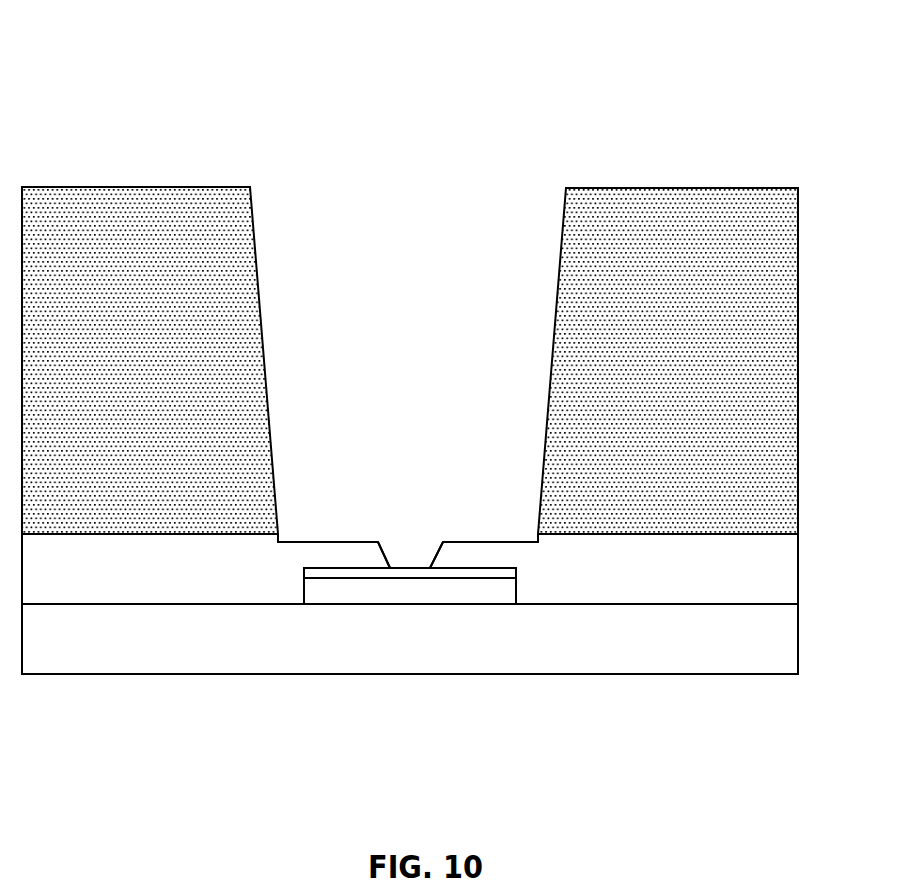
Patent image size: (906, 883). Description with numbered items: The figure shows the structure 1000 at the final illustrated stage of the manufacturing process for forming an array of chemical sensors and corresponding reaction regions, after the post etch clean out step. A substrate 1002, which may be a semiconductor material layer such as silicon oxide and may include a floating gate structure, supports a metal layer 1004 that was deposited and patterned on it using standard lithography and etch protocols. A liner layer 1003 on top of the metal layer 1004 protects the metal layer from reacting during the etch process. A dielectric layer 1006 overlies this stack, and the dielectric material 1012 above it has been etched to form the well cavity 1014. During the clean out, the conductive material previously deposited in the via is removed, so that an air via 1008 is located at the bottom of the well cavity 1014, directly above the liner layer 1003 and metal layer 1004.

The structure 1000 is at (126, 83).
The substrate 1002 is at (622, 674).
The liner layer 1003 is at (320, 568).
The metal layer 1004 is at (517, 595).
The dielectric layer 1006 is at (658, 533).
The air via 1008 is at (415, 530).
The dielectric material 1012 is at (619, 188).
The well cavity 1014 is at (439, 172).